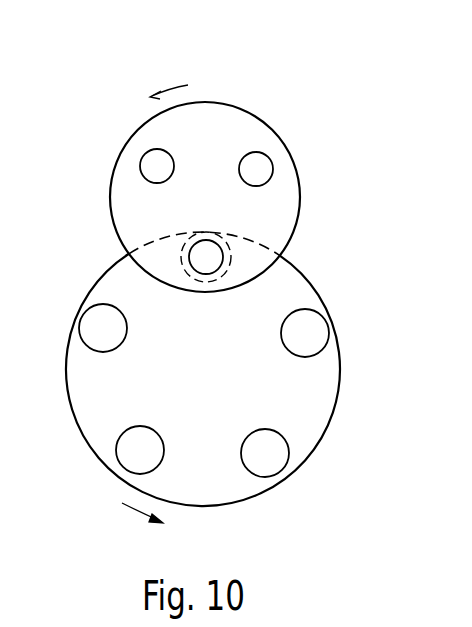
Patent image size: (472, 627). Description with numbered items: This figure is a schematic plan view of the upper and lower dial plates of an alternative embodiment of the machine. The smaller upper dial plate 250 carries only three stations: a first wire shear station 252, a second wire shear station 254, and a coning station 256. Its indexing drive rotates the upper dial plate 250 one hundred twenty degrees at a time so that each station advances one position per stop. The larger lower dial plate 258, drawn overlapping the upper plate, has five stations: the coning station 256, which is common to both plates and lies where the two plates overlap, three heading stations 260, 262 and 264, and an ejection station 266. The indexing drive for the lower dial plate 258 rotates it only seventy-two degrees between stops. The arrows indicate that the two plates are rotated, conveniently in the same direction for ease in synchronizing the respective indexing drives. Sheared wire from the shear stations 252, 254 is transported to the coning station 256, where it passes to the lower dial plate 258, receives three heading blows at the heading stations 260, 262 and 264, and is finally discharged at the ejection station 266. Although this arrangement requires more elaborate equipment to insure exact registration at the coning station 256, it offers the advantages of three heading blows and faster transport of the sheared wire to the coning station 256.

The upper dial plate 250 is at (205, 180).
The first wire shear station 252 is at (273, 170).
The second wire shear station 254 is at (142, 158).
The coning station 256 is at (228, 250).
The lower dial plate 258 is at (65, 392).
The heading station 260 is at (92, 303).
The heading station 262 is at (117, 453).
The heading station 264 is at (287, 462).
The ejection station 266 is at (323, 318).